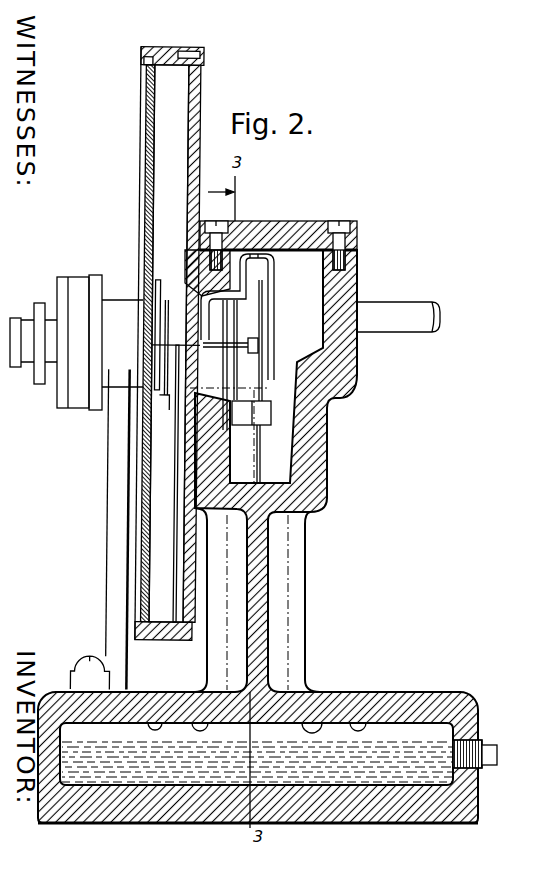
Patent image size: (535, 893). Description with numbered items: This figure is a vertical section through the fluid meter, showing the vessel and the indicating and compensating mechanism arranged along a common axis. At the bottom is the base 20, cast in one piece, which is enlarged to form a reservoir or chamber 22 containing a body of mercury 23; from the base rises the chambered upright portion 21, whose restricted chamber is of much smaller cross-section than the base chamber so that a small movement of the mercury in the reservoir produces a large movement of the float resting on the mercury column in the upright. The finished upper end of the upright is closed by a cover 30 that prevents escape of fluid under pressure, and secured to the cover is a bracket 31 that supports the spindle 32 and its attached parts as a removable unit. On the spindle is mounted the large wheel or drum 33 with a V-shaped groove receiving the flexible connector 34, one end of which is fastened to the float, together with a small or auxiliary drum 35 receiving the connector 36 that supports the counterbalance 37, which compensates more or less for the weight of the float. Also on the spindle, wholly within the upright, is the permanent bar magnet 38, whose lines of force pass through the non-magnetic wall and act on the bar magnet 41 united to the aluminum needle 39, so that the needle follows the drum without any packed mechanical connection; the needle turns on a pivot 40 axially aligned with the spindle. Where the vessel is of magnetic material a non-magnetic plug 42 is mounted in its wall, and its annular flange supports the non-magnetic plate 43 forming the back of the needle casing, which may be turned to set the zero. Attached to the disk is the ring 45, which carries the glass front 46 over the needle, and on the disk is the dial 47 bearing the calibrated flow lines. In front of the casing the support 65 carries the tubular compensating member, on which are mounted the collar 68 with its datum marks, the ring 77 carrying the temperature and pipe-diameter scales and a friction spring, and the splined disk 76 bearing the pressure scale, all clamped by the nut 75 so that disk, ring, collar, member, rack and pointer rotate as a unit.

The base 20 is at (462, 805).
The chambered upright portion 21 is at (290, 573).
The reservoir or chamber 22 is at (396, 740).
The body of mercury 23 is at (331, 757).
The cover 30 is at (285, 236).
The bracket 31 is at (274, 262).
The spindle 32 is at (245, 348).
The large wheel or drum 33 is at (262, 320).
The flexible connector 34 is at (261, 466).
The small or auxiliary drum 35 is at (260, 343).
The connector 36 is at (258, 381).
The counterbalance 37 is at (251, 413).
The permanent bar magnet 38 is at (185, 413).
The needle 39 is at (176, 500).
The pivot 40 is at (174, 347).
The bar magnet 41 is at (160, 330).
The non-magnetic plug 42 is at (188, 278).
The non-magnetic plate 43 is at (199, 92).
The ring 45 is at (166, 48).
The glass front 46 is at (150, 105).
The dial 47 is at (186, 142).
The support 65 is at (110, 452).
The collar 68 is at (98, 275).
The clamping nut 75 is at (15, 318).
The disk 76 is at (40, 303).
The ring 77 is at (76, 277).